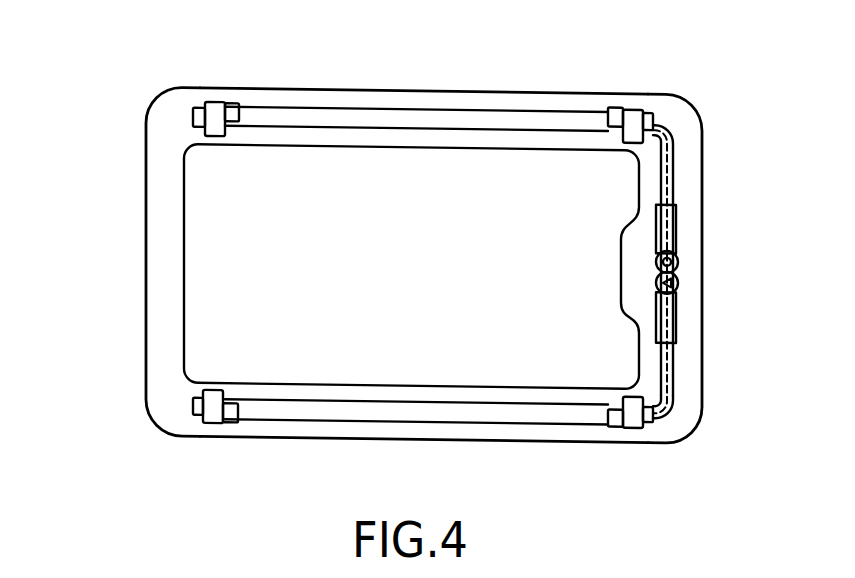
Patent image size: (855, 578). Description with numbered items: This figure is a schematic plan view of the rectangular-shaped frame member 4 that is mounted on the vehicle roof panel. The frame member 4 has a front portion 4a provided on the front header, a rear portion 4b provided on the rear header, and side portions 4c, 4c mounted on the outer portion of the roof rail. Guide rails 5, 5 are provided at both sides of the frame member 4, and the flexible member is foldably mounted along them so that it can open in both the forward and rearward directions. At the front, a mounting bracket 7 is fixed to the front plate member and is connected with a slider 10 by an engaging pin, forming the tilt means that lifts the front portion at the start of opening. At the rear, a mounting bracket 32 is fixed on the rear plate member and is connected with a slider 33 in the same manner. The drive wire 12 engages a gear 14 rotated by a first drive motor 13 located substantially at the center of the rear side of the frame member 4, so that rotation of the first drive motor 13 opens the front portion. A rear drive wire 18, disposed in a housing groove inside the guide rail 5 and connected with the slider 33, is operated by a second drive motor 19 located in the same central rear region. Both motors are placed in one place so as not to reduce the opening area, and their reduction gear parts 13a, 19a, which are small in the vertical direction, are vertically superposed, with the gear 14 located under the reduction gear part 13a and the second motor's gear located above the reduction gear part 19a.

The frame member 4 is at (422, 267).
The front portion of the frame member 4a is at (145, 278).
The rear portion of the frame member 4b is at (703, 342).
The side portions of the frame member 4c is at (467, 103).
The guide rail 5 is at (416, 131).
The mounting bracket 7 is at (214, 106).
The slider 10 is at (232, 124).
The drive wire 12 is at (672, 388).
The first drive motor 13 is at (677, 322).
The reduction gear part 13a is at (656, 283).
The gear 14 is at (678, 284).
The rear drive wire 18 is at (660, 166).
The second drive motor 19 is at (677, 219).
The reduction gear part 19a is at (678, 262).
The mounting bracket 32 is at (637, 106).
The slider 33 is at (617, 105).